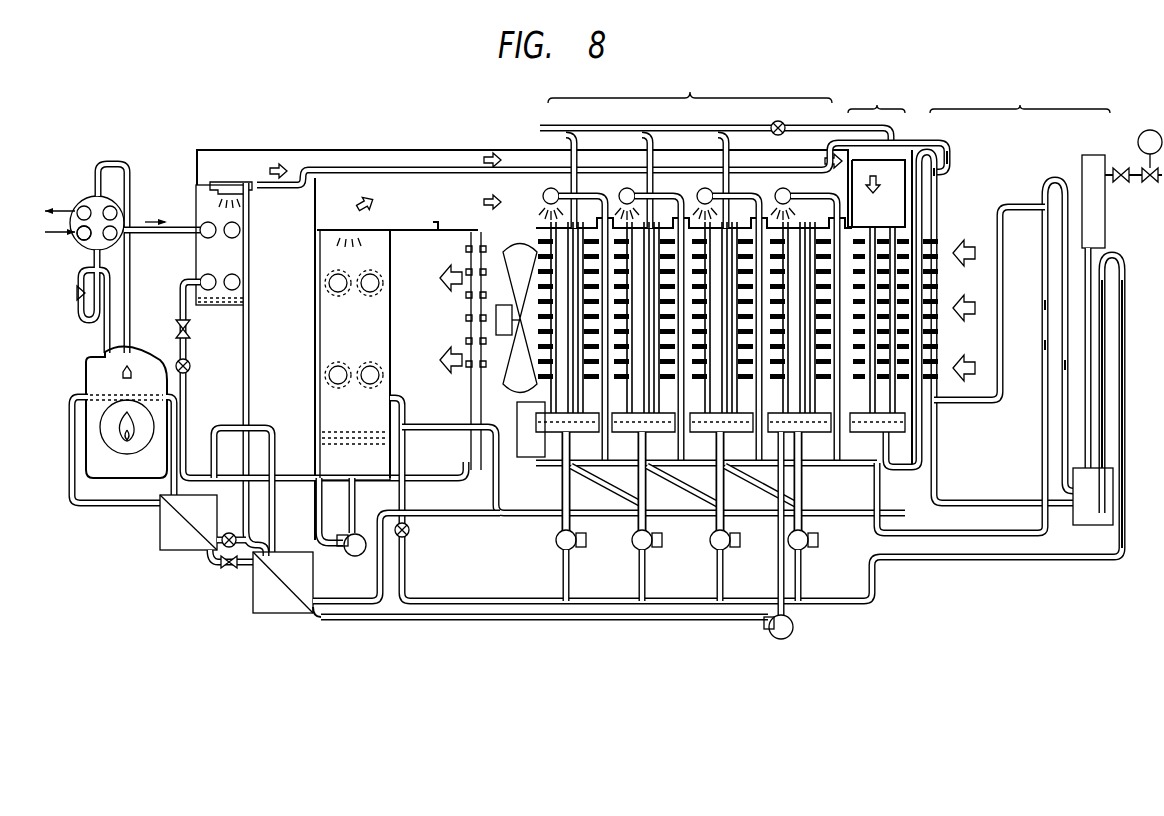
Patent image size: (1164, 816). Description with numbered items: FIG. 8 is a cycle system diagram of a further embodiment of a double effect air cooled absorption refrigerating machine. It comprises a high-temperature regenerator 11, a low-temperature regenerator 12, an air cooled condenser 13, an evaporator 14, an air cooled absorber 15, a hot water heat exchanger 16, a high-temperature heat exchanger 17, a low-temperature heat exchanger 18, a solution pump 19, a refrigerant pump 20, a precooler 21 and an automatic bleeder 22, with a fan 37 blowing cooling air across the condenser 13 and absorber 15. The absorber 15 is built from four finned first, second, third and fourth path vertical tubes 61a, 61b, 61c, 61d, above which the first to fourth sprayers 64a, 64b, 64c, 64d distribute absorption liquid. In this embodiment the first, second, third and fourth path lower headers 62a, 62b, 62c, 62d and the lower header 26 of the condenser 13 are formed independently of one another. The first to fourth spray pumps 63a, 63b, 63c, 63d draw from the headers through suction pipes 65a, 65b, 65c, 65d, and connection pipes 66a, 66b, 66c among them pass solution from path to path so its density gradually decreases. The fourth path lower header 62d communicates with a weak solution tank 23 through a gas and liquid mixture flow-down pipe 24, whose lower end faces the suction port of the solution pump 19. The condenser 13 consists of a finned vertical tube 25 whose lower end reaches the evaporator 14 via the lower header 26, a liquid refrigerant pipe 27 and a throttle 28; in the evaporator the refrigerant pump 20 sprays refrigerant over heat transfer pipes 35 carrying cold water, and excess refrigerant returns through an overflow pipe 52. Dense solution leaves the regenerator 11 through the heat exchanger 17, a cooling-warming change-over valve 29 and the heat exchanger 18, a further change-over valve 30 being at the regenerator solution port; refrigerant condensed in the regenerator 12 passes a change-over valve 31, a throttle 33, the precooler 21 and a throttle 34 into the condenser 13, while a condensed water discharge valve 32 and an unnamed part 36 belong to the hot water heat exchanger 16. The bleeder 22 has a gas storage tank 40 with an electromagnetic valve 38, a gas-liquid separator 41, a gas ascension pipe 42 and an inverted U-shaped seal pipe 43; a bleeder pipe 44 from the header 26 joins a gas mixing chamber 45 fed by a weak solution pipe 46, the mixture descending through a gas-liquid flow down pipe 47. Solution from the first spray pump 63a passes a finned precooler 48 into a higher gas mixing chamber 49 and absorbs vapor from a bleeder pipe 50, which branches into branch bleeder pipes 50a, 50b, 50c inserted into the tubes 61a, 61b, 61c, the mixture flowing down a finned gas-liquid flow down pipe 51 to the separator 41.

The high-temperature regenerator 11 is at (145, 360).
The low-temperature regenerator 12 is at (200, 207).
The air cooled condenser 13 is at (876, 95).
The evaporator 14 is at (377, 330).
The air cooled absorber 15 is at (690, 84).
The hot water heat exchanger 16 is at (92, 200).
The high-temperature heat exchanger 17 is at (160, 527).
The low-temperature heat exchanger 18 is at (253, 602).
The solution pump 19 is at (792, 636).
The refrigerant pump 20 is at (349, 556).
The precooler 21 is at (470, 314).
The automatic bleeder 22 is at (1020, 96).
The weak solution tank 23 is at (522, 420).
The gas and liquid mixture flow-down pipe 24 is at (830, 448).
The vertical tube 25 is at (950, 308).
The lower header 26 is at (903, 462).
The liquid refrigerant pipe 27 is at (877, 594).
The throttle 28 is at (410, 531).
The cooling-warming change-over valve 29 is at (246, 540).
The air-conditioning change-over valve 30 is at (219, 567).
The cooling-warming change-over valve 31 is at (189, 334).
The condensed water discharge valve 32 is at (79, 303).
The throttle 33 is at (186, 374).
The throttle 34 is at (785, 124).
The heat transfer pipes 35 is at (385, 362).
The port 36 is at (86, 242).
The fan 37 is at (513, 268).
The electromagnetic valve 38 is at (1152, 182).
The gas storage tank 40 is at (1106, 219).
The gas-liquid separator 41 is at (1110, 488).
The gas ascension pipe 42 is at (1068, 364).
The inverted U-shaped seal pipe 43 is at (1120, 262).
The bleeder pipe 44 is at (1003, 330).
The gas mixing chamber 45 is at (1056, 235).
The weak solution pipe 46 is at (1043, 350).
The gas-liquid flow down pipe 47 is at (1090, 382).
The precooler 48 is at (924, 232).
The gas mixing chamber 49 is at (940, 177).
The bleeder pipe 50 is at (951, 163).
The branch bleeder pipe 50a is at (566, 136).
The branch bleeder pipe 50b is at (650, 136).
The branch bleeder pipe 50c is at (726, 136).
The gas-liquid flow down pipe 51 is at (942, 252).
The overflow pipe 52 is at (503, 520).
The first path vertical tube 61a is at (571, 303).
The second path vertical tube 61b is at (647, 303).
The third path vertical tube 61c is at (724, 303).
The fourth path vertical tube 61d is at (838, 212).
The first path lower header 62a is at (569, 440).
The second path lower header 62b is at (648, 440).
The third path lower header 62c is at (724, 440).
The fourth path lower header 62d is at (779, 440).
The first spray pump 63a is at (570, 570).
The second spray pump 63b is at (646, 570).
The third spray pump 63c is at (724, 570).
The fourth spray pump 63d is at (802, 560).
The first sprayer 64a is at (549, 188).
The second sprayer 64b is at (626, 188).
The third sprayer 64c is at (705, 188).
The fourth sprayer 64d is at (790, 192).
The suction pipe 65a is at (569, 551).
The suction pipe 65b is at (646, 551).
The suction pipe 65c is at (722, 551).
The suction pipe 65d is at (806, 551).
The connection pipe 66a is at (622, 602).
The connection pipe 66b is at (668, 602).
The connection pipe 66c is at (742, 602).